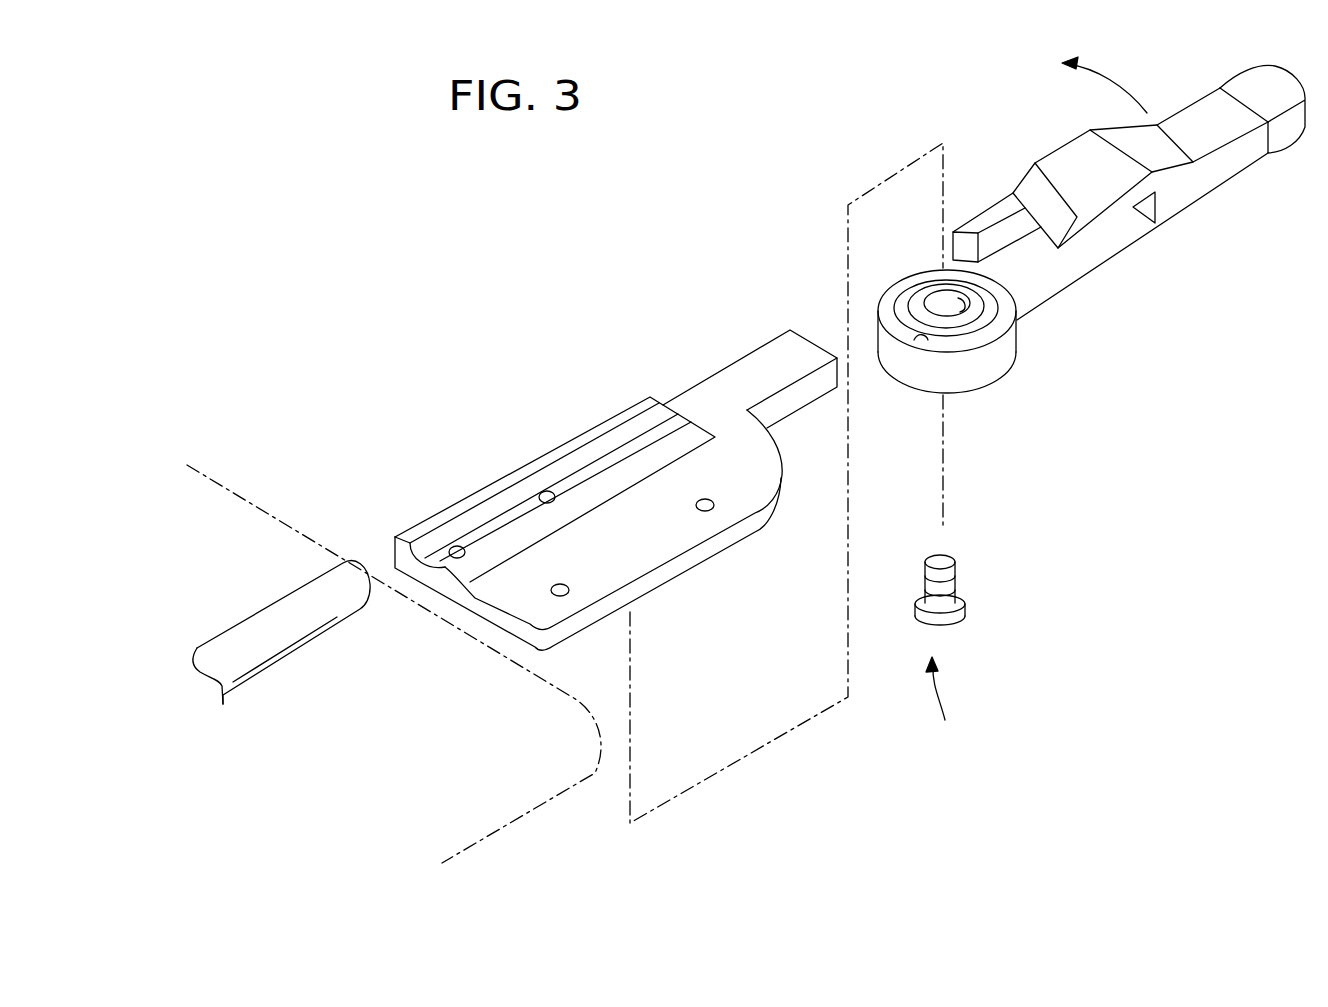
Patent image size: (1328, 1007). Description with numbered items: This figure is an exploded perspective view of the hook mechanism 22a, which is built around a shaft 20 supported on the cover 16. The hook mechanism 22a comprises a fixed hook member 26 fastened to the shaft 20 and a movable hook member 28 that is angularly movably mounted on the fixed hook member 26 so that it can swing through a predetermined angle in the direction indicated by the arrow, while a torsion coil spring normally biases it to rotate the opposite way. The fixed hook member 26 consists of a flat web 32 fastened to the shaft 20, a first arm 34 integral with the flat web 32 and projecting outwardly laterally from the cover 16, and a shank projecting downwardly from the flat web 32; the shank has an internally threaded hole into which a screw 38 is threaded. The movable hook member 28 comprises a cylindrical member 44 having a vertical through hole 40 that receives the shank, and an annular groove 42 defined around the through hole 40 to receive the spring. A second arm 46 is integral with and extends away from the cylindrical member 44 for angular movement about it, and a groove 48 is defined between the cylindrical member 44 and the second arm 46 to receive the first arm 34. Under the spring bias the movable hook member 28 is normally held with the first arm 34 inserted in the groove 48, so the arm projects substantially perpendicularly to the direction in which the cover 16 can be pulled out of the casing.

The cover 16 is at (205, 472).
The shaft 20 is at (238, 623).
The hook mechanism 22a is at (942, 710).
The fixed hook member 26 is at (522, 461).
The movable hook member 28 is at (1089, 281).
The flat web 32 is at (646, 553).
The first arm 34 is at (770, 358).
The screw 38 is at (968, 612).
The through hole 40 is at (963, 303).
The annular groove 42 is at (917, 340).
The cylindrical member 44 is at (957, 376).
The second arm 46 is at (1241, 82).
The groove 48 is at (1150, 205).